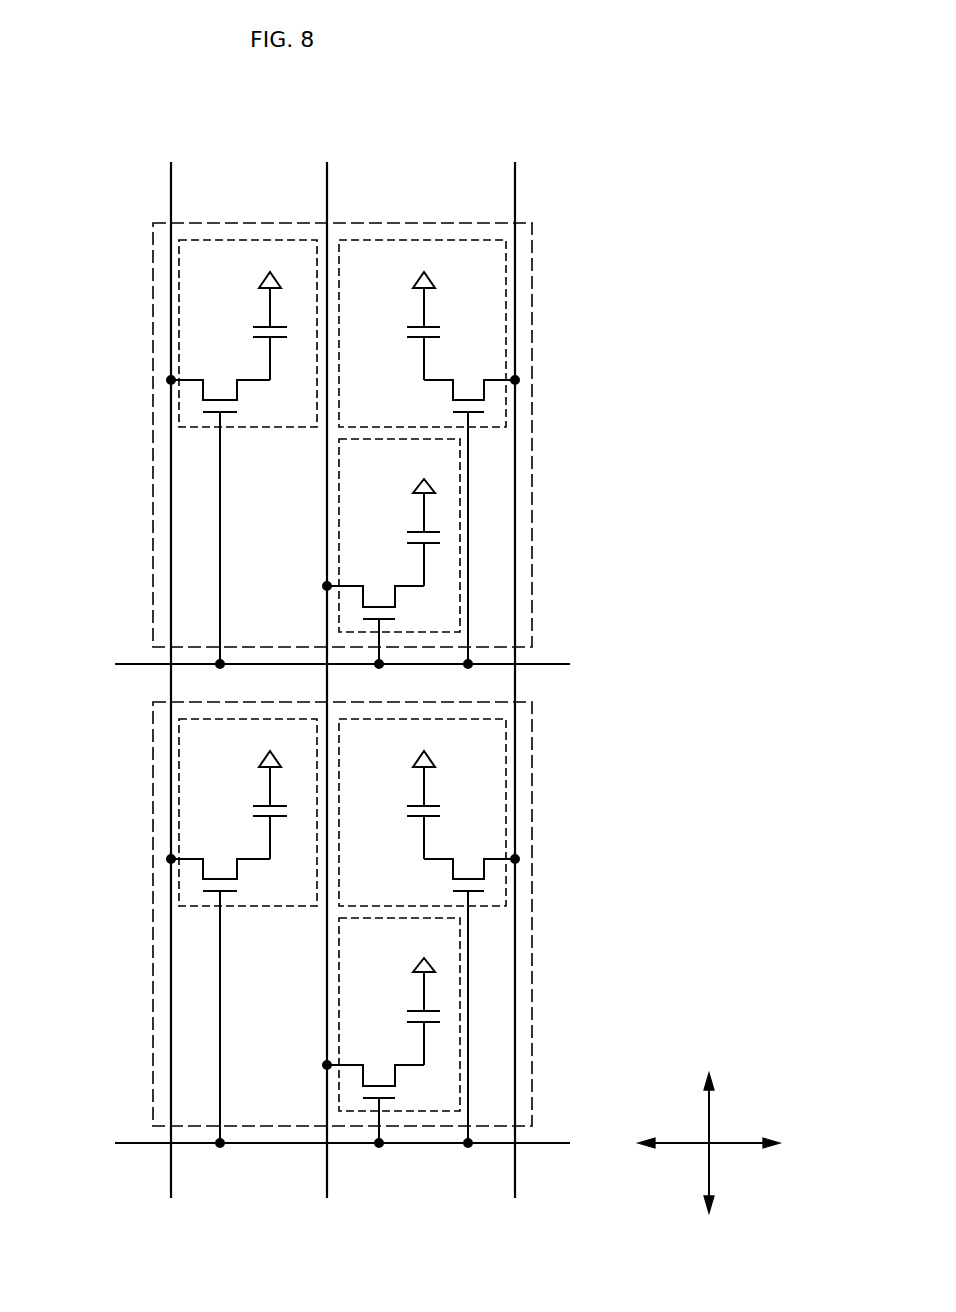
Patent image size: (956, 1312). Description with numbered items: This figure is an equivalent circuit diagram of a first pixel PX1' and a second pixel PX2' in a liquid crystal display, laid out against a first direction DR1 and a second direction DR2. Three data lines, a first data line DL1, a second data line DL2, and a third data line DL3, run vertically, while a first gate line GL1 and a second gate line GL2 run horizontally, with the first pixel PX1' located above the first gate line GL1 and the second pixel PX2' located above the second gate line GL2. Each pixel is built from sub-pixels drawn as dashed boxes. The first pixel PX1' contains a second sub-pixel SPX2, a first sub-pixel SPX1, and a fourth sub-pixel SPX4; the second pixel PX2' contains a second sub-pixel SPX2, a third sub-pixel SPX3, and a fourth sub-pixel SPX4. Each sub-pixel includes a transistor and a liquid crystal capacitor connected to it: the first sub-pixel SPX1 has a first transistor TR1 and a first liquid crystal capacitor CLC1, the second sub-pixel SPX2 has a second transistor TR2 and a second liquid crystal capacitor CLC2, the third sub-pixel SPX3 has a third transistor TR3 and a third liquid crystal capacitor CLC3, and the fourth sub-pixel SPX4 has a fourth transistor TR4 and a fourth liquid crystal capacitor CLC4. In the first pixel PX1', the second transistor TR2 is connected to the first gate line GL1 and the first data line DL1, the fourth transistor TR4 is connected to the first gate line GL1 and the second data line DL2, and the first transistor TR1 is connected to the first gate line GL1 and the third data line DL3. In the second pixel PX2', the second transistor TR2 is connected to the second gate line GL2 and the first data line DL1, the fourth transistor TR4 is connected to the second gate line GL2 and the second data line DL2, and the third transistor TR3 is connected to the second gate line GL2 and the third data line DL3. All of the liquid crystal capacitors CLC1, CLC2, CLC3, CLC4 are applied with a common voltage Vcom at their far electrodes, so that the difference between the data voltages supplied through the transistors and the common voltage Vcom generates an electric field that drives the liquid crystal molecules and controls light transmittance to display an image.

The first data line DL1 is at (169, 665).
The second data line DL2 is at (329, 665).
The third data line DL3 is at (516, 665).
The first gate line GL1 is at (317, 665).
The second gate line GL2 is at (317, 1144).
The first pixel PX1' is at (292, 435).
The second pixel PX2' is at (292, 914).
The first sub-pixel SPX1 is at (506, 285).
The second sub-pixel SPX2 is at (179, 285).
The third sub-pixel SPX3 is at (506, 764).
The fourth sub-pixel SPX4 is at (460, 529).
The first liquid crystal capacitor CLC1 is at (456, 351).
The second liquid crystal capacitor CLC2 is at (239, 590).
The third liquid crystal capacitor CLC3 is at (456, 830).
The fourth liquid crystal capacitor CLC4 is at (393, 795).
The first transistor TR1 is at (471, 510).
The second transistor TR2 is at (218, 750).
The third transistor TR3 is at (471, 989).
The fourth transistor TR4 is at (373, 853).
The common voltage Vcom is at (347, 629).
The first direction DR1 is at (733, 1144).
The second direction DR2 is at (713, 1130).